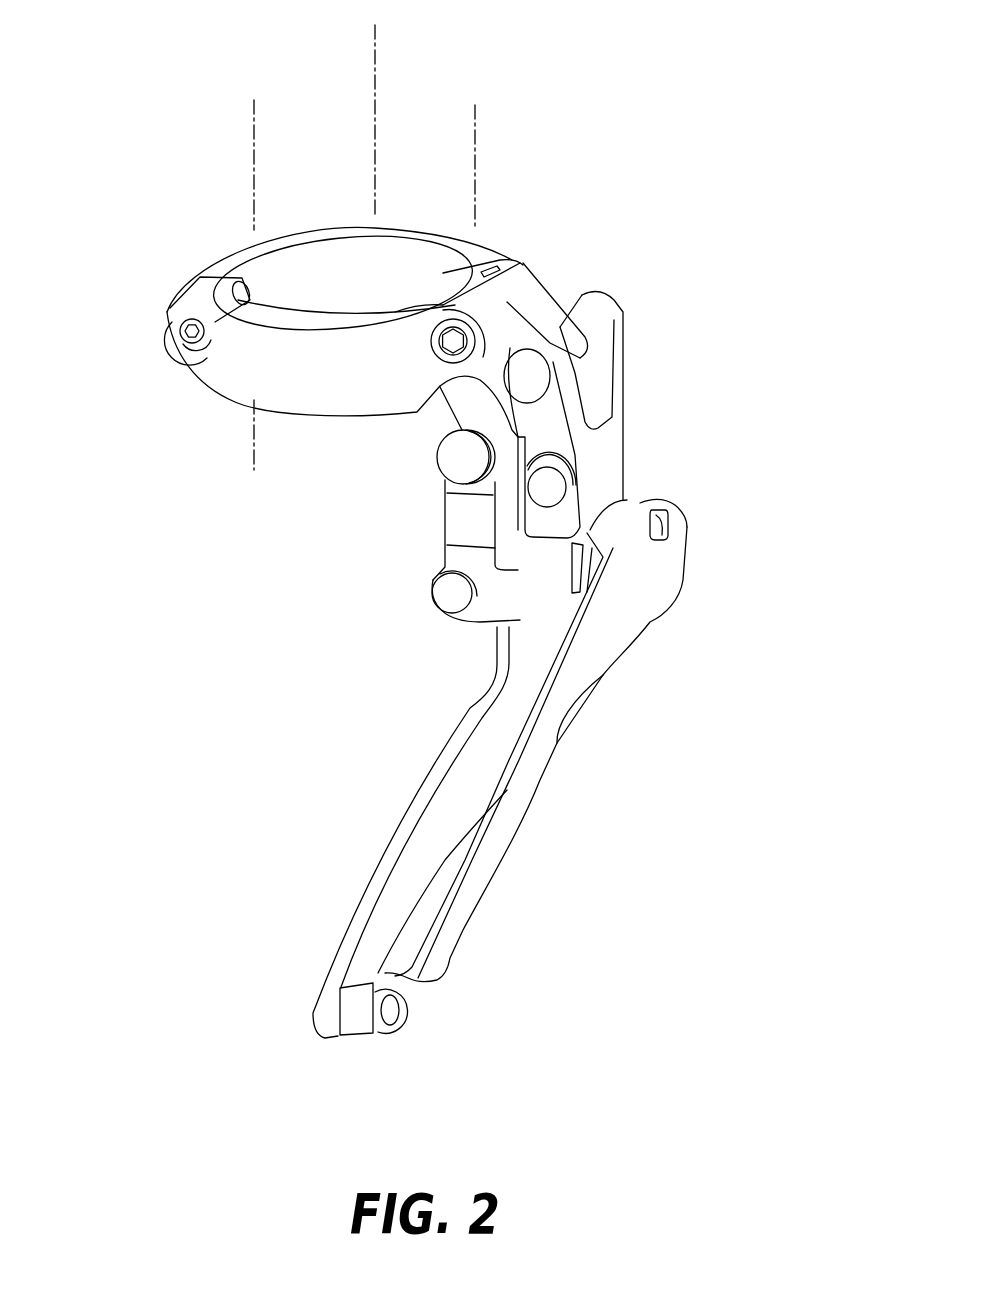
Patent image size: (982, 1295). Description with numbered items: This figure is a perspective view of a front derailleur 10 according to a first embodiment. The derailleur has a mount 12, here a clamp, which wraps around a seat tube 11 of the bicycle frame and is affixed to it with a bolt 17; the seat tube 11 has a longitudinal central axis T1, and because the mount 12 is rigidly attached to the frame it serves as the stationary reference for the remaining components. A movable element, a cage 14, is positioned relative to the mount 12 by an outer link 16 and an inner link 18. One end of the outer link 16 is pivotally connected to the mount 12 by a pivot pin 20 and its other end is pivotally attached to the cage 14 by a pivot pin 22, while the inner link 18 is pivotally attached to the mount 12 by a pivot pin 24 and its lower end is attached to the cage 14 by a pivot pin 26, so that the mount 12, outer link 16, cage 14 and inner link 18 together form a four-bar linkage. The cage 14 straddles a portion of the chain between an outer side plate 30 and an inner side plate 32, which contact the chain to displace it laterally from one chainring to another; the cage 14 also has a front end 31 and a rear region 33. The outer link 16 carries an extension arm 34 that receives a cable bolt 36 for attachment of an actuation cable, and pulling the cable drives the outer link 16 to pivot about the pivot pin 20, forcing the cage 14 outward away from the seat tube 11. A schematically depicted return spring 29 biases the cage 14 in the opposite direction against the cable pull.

The front derailleur 10 is at (238, 700).
The seat tube 11 is at (475, 160).
The longitudinal central axis T1 is at (375, 70).
The mount 12 is at (245, 378).
The cage 14 is at (612, 613).
The outer link 16 is at (622, 440).
The bolt 17 is at (191, 332).
The inner link 18 is at (467, 515).
The pivot pin 20 is at (528, 376).
The pivot pin 22 is at (548, 490).
The pivot pin 24 is at (455, 457).
The pivot pin 26 is at (448, 595).
The spring 29 is at (487, 688).
The outer side plate 30 is at (515, 805).
The front end 31 is at (688, 545).
The inner side plate 32 is at (415, 840).
The rear region 33 is at (322, 1030).
The extension arm 34 is at (520, 274).
The cable bolt 36 is at (445, 303).